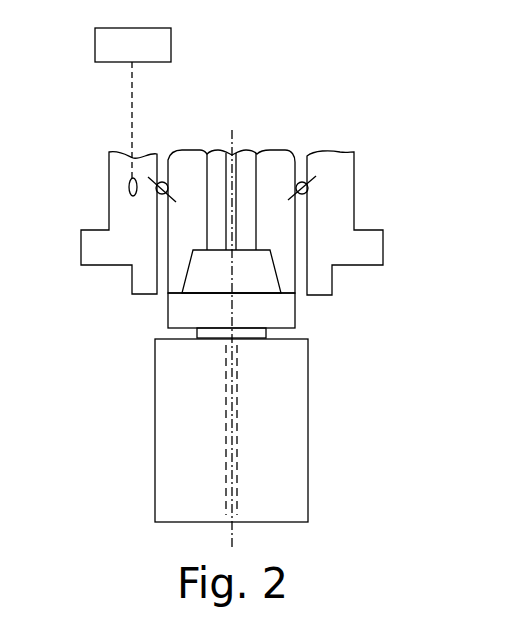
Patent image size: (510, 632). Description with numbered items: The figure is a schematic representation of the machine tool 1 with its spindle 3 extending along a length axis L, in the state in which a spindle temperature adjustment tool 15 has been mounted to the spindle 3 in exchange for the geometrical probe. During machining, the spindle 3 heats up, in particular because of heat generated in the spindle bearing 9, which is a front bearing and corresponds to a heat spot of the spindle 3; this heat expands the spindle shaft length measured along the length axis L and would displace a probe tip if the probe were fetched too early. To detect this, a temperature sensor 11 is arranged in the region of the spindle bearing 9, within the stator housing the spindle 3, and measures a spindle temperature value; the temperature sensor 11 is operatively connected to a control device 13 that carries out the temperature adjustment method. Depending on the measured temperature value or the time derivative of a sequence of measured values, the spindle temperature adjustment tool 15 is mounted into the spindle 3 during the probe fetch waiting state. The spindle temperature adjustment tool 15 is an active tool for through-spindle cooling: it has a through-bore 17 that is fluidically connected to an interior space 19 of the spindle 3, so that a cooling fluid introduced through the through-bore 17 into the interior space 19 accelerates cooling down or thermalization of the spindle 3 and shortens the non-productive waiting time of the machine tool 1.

The machine tool 1 is at (362, 123).
The spindle 3 is at (307, 209).
The spindle bearing 9 is at (306, 190).
The temperature sensor 11 is at (129, 187).
The control device 13 is at (171, 33).
The spindle temperature adjustment tool 15 is at (309, 418).
The through-bore 17 is at (238, 458).
The interior space 19 is at (218, 238).
The length axis L is at (232, 140).